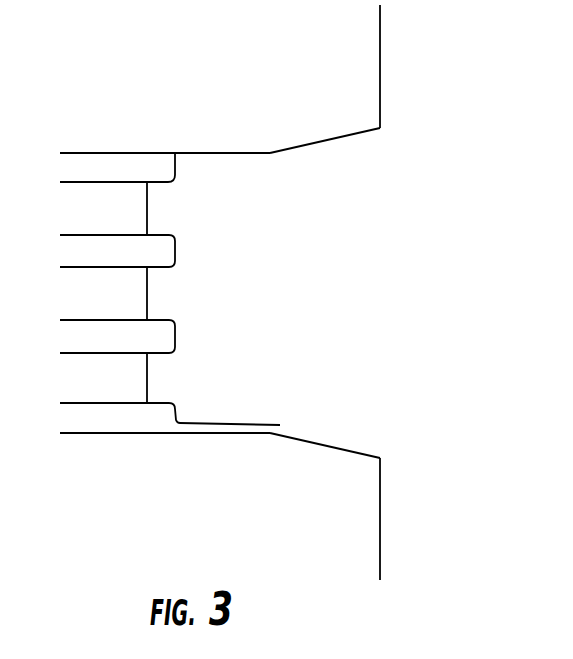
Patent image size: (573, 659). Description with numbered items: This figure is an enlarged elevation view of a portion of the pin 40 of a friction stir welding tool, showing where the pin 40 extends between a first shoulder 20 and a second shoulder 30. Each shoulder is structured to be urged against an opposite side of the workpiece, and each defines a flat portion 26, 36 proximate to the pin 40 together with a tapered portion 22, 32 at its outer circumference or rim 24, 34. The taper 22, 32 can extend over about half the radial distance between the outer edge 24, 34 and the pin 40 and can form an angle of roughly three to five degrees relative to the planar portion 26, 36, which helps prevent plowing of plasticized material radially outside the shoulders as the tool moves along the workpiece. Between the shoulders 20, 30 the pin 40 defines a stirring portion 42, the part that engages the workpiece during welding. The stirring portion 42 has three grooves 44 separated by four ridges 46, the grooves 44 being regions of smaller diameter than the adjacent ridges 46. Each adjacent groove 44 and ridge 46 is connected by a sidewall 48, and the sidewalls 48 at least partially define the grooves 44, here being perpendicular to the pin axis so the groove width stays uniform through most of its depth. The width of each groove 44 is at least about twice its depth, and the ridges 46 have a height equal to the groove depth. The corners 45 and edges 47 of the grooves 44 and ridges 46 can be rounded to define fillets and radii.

The first shoulder 20 is at (270, 153).
The tapered portion 22 is at (328, 137).
The rim 24 is at (381, 73).
The flat portion 26 is at (198, 153).
The second shoulder 30 is at (280, 437).
The tapered portion 32 is at (333, 447).
The rim 34 is at (381, 536).
The flat portion 36 is at (218, 433).
The pin 40 is at (88, 196).
The stirring portion 42 is at (316, 249).
The groove 44 is at (147, 203).
The corner 45 is at (147, 232).
The ridge 46 is at (176, 340).
The edge 47 is at (176, 237).
The sidewall 48 is at (166, 267).